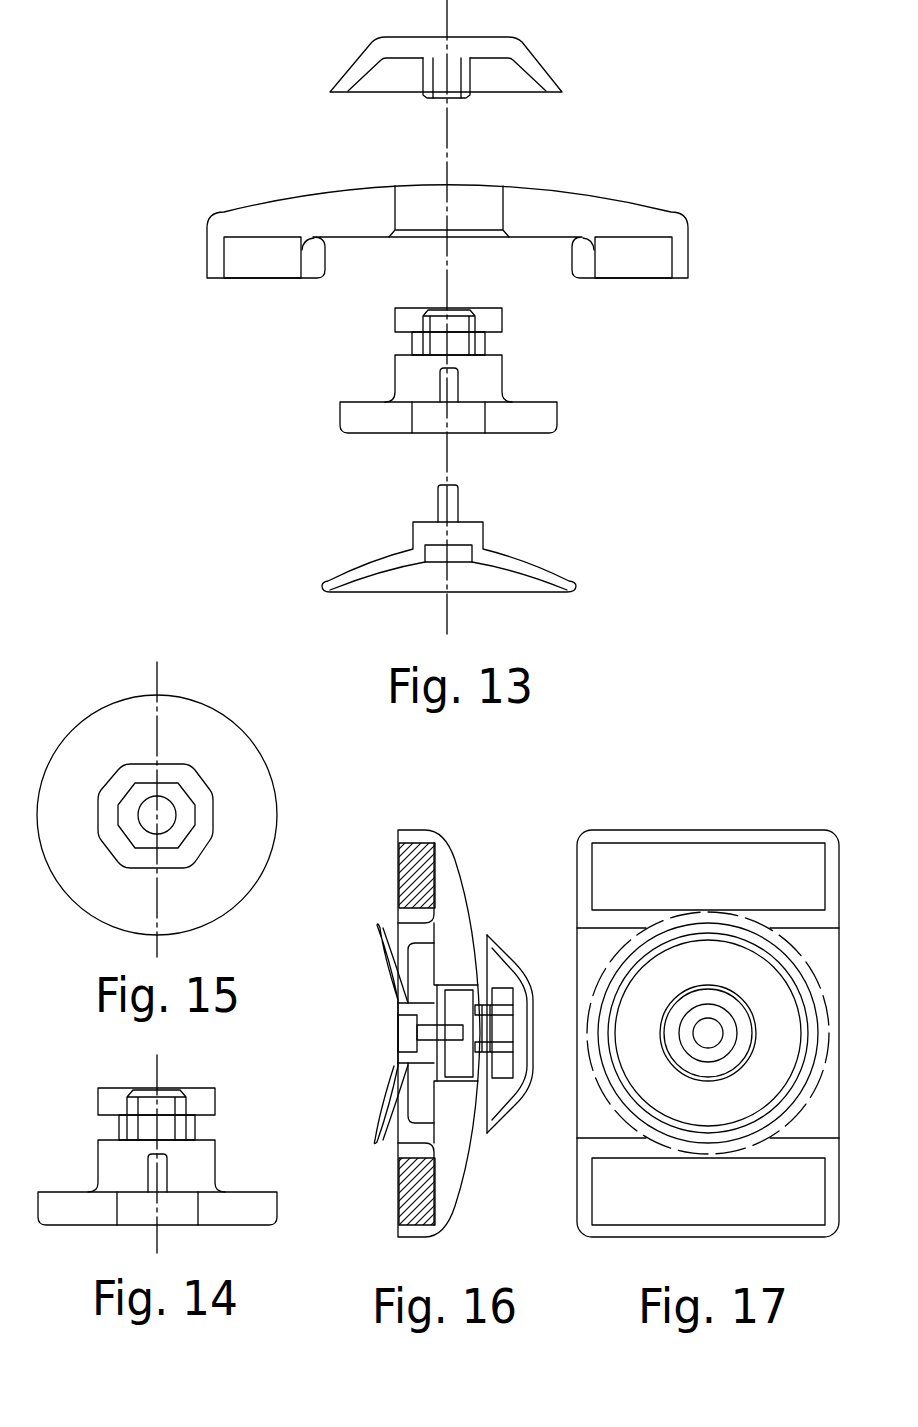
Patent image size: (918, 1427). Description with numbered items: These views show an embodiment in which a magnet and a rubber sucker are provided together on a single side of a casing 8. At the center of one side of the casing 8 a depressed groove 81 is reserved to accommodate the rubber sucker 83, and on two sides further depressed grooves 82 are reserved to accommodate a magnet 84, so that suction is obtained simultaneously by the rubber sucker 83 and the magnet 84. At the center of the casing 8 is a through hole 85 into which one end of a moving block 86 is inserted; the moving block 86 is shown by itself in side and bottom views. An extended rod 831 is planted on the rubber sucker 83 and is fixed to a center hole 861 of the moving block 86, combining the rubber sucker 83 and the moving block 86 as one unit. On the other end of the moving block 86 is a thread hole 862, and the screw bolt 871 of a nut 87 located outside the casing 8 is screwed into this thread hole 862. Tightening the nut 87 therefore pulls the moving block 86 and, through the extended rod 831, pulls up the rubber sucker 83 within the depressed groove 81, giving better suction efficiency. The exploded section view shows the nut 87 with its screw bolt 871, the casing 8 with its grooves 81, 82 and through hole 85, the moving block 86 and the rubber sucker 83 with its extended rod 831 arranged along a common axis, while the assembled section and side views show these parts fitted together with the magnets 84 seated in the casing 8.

In FIG. 13, the casing 8 is at (595, 208).
In FIG. 16, the casing 8 is at (463, 905).
In FIG. 13, the depressed groove 81 is at (343, 260).
In FIG. 13, the depressed groove 82 is at (637, 272).
In FIG. 13, the rubber sucker 83 is at (547, 568).
In FIG. 16, the rubber sucker 83 is at (398, 970).
In FIG. 13, the extended rod 831 is at (458, 513).
In FIG. 16, the magnet 84 is at (402, 863).
In FIG. 17, the magnet 84 is at (655, 855).
In FIG. 13, the through hole 85 is at (413, 200).
In FIG. 13, the moving block 86 is at (492, 380).
In FIG. 15, the moving block 86 is at (202, 723).
In FIG. 14, the moving block 86 is at (208, 1173).
In FIG. 13, the center hole 861 is at (443, 398).
In FIG. 14, the center hole 861 is at (155, 1178).
In FIG. 13, the thread hole 862 is at (457, 317).
In FIG. 14, the thread hole 862 is at (163, 1103).
In FIG. 13, the nut 87 is at (548, 68).
In FIG. 16, the nut 87 is at (498, 947).
In FIG. 13, the screw bolt 871 is at (467, 85).